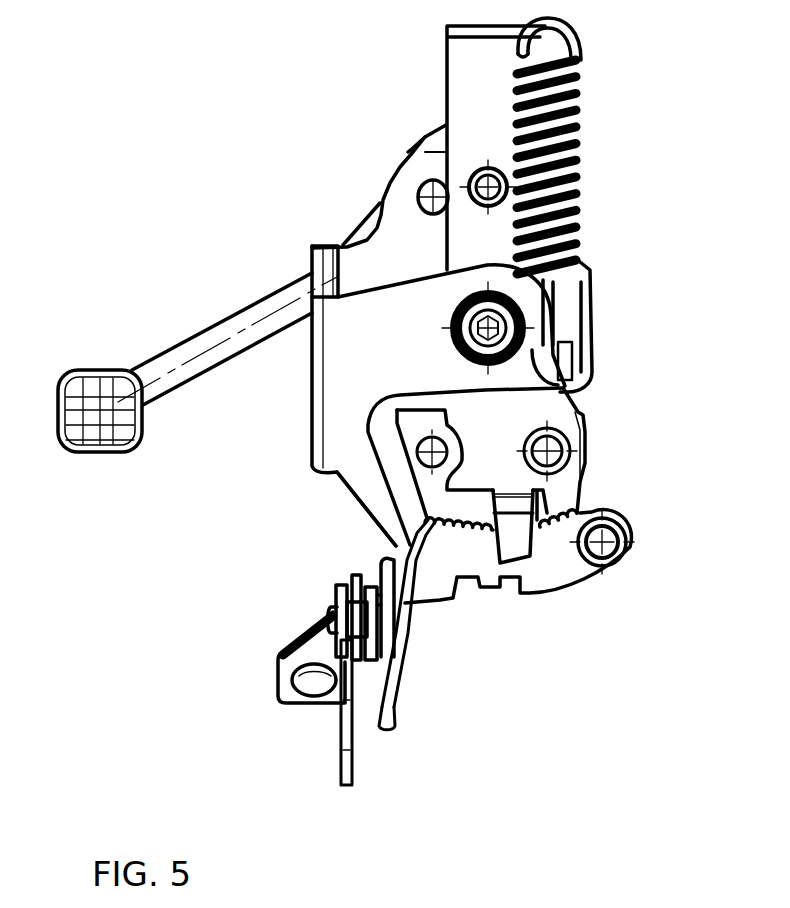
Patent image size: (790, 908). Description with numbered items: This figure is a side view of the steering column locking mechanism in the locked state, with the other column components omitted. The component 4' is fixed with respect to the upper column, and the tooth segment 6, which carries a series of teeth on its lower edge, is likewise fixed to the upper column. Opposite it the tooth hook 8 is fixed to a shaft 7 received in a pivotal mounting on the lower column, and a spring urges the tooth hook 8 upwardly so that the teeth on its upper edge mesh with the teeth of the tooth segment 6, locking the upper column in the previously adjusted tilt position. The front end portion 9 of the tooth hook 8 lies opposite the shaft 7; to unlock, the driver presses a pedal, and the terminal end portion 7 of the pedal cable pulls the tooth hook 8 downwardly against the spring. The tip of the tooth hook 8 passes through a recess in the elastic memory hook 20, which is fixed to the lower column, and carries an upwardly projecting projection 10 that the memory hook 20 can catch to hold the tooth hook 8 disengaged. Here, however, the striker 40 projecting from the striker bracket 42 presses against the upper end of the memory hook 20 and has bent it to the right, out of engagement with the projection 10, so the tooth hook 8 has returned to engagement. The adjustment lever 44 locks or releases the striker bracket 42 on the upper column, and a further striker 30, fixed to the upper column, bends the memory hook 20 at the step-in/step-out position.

The component fixed with respect to the upper column 4' is at (452, 205).
The striker bracket 42 is at (400, 353).
The adjustment lever 44 is at (180, 340).
The striker 40 is at (368, 512).
The projection 10 is at (383, 556).
The front end portion 9 is at (330, 614).
The shaft / terminal end portion of cable 7 is at (632, 522).
The tooth segment 6 is at (565, 495).
The tooth hook 8 is at (465, 563).
The striker 30 is at (520, 552).
The memory hook 20 is at (405, 650).